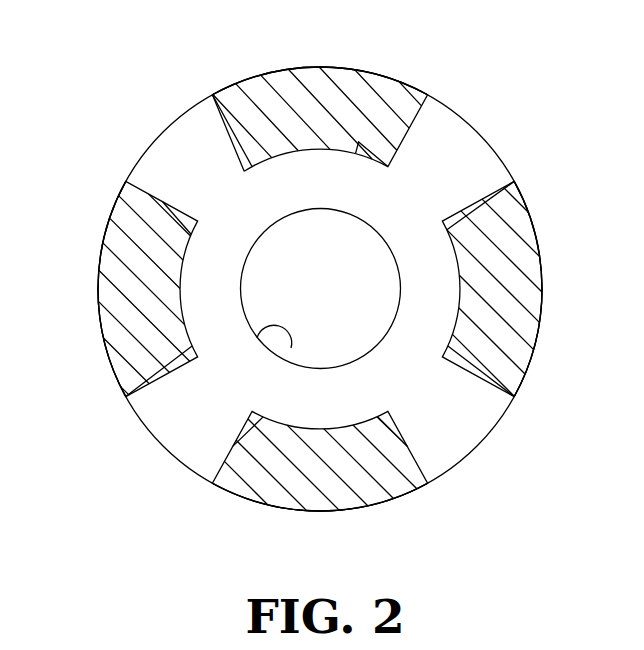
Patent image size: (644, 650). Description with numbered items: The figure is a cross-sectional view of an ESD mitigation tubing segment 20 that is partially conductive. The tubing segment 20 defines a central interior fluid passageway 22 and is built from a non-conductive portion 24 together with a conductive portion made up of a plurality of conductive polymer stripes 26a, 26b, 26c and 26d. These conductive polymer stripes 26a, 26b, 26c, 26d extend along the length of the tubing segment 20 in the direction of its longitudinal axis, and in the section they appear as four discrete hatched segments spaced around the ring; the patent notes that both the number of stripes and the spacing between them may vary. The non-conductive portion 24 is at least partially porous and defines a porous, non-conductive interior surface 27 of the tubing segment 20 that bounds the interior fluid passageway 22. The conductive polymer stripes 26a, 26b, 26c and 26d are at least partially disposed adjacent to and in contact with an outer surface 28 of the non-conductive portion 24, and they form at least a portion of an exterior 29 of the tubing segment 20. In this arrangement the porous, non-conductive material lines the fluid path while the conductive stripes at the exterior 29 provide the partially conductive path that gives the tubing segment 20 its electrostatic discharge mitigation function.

The tubing segment 20 is at (552, 100).
The interior fluid passageway 22 is at (282, 254).
The non-conductive portion 24 is at (463, 432).
The conductive polymer stripe 26a is at (322, 112).
The conductive polymer stripe 26b is at (518, 274).
The conductive polymer stripe 26c is at (310, 468).
The conductive polymer stripe 26d is at (128, 289).
The porous non-conductive interior surface 27 is at (257, 338).
The outer surface 28 is at (395, 92).
The exterior 29 is at (254, 78).